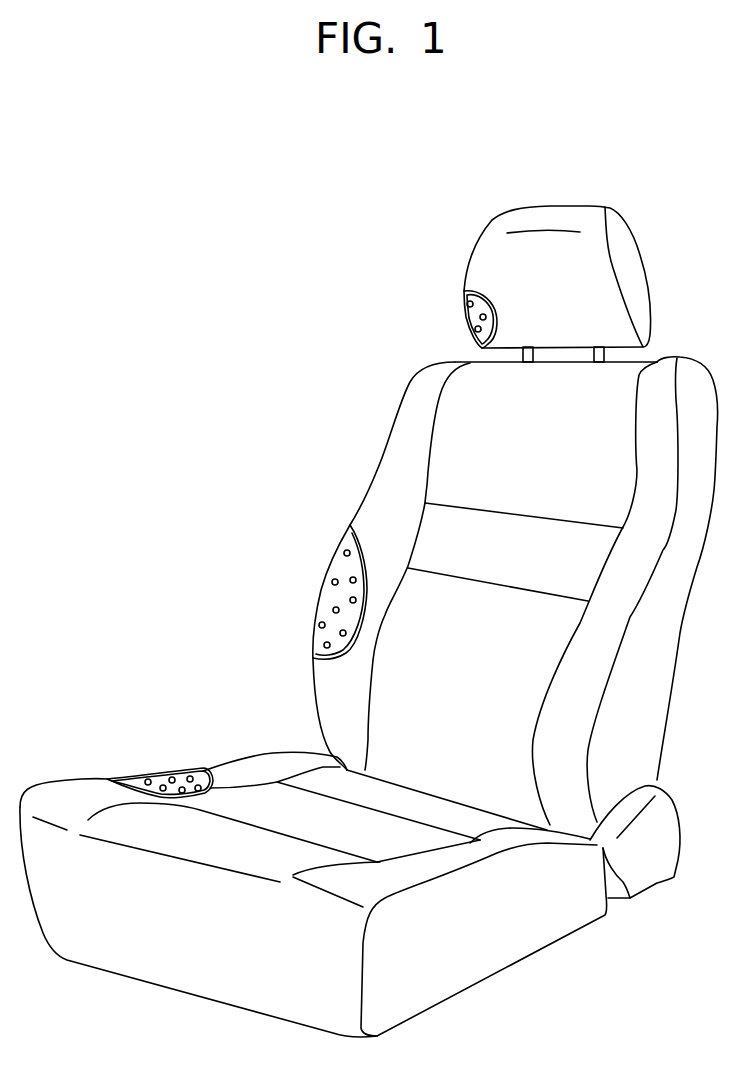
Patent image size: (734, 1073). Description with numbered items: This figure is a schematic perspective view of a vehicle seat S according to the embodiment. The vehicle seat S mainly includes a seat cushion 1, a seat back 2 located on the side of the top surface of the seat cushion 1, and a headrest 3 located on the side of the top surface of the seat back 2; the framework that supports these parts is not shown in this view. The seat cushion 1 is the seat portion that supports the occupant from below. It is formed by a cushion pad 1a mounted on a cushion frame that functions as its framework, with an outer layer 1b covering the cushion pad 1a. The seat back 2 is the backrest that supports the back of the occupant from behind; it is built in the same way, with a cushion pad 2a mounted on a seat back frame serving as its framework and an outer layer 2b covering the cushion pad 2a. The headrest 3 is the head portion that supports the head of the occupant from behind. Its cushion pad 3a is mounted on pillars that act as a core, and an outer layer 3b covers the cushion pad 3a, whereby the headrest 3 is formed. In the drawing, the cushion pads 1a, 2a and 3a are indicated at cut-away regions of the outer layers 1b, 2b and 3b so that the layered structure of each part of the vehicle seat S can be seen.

The vehicle seat S is at (187, 217).
The seat cushion 1 is at (217, 717).
The cushion pad 1a is at (158, 779).
The outer layer 1b is at (208, 777).
The seat back 2 is at (348, 452).
The cushion pad 2a is at (333, 595).
The outer layer 2b is at (353, 527).
The headrest 3 is at (462, 227).
The cushion pad 3a is at (470, 316).
The outer layer 3b is at (464, 292).